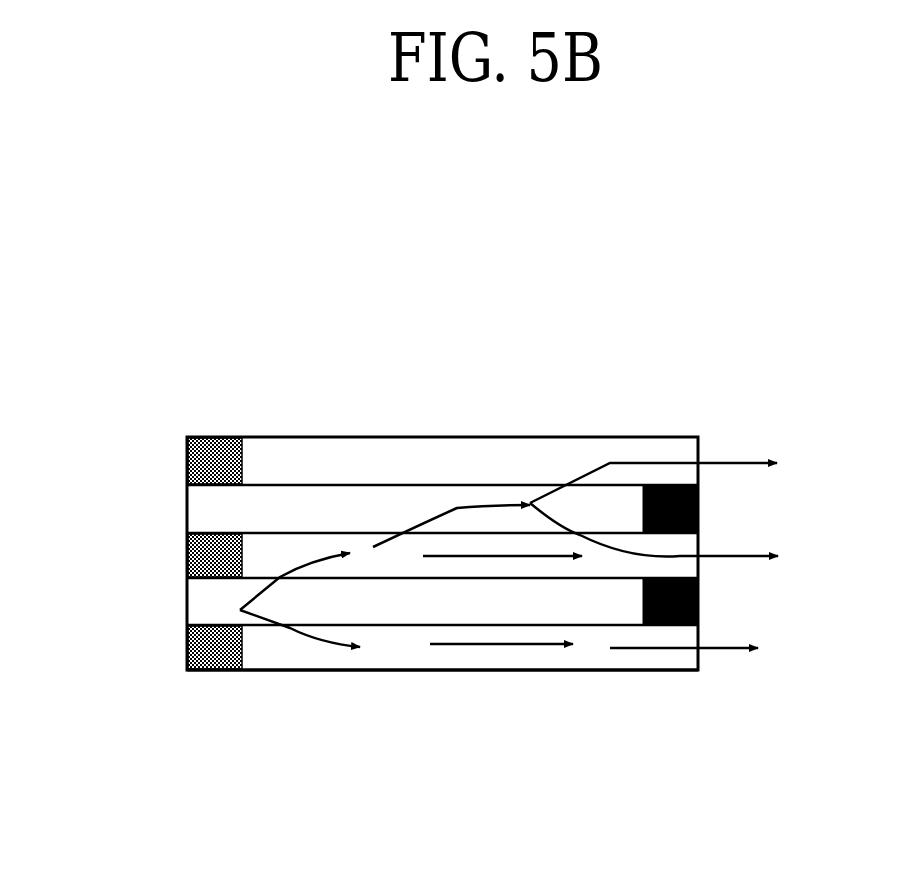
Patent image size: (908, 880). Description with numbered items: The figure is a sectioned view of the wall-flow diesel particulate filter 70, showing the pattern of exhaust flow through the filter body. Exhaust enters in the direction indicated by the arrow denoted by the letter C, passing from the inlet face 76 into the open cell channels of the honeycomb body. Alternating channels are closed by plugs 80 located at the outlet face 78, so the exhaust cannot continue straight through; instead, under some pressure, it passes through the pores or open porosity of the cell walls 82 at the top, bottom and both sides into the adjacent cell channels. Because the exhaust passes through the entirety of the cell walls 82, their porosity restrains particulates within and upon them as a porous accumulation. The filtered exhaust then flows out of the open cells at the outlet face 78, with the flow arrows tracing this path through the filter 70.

The filter 70 is at (558, 342).
The inlet face 76 is at (188, 449).
The outlet end face 78 is at (698, 442).
The plugs 80 is at (698, 503).
The cell walls 82 is at (372, 670).
The exhaust flow direction arrow C is at (162, 610).